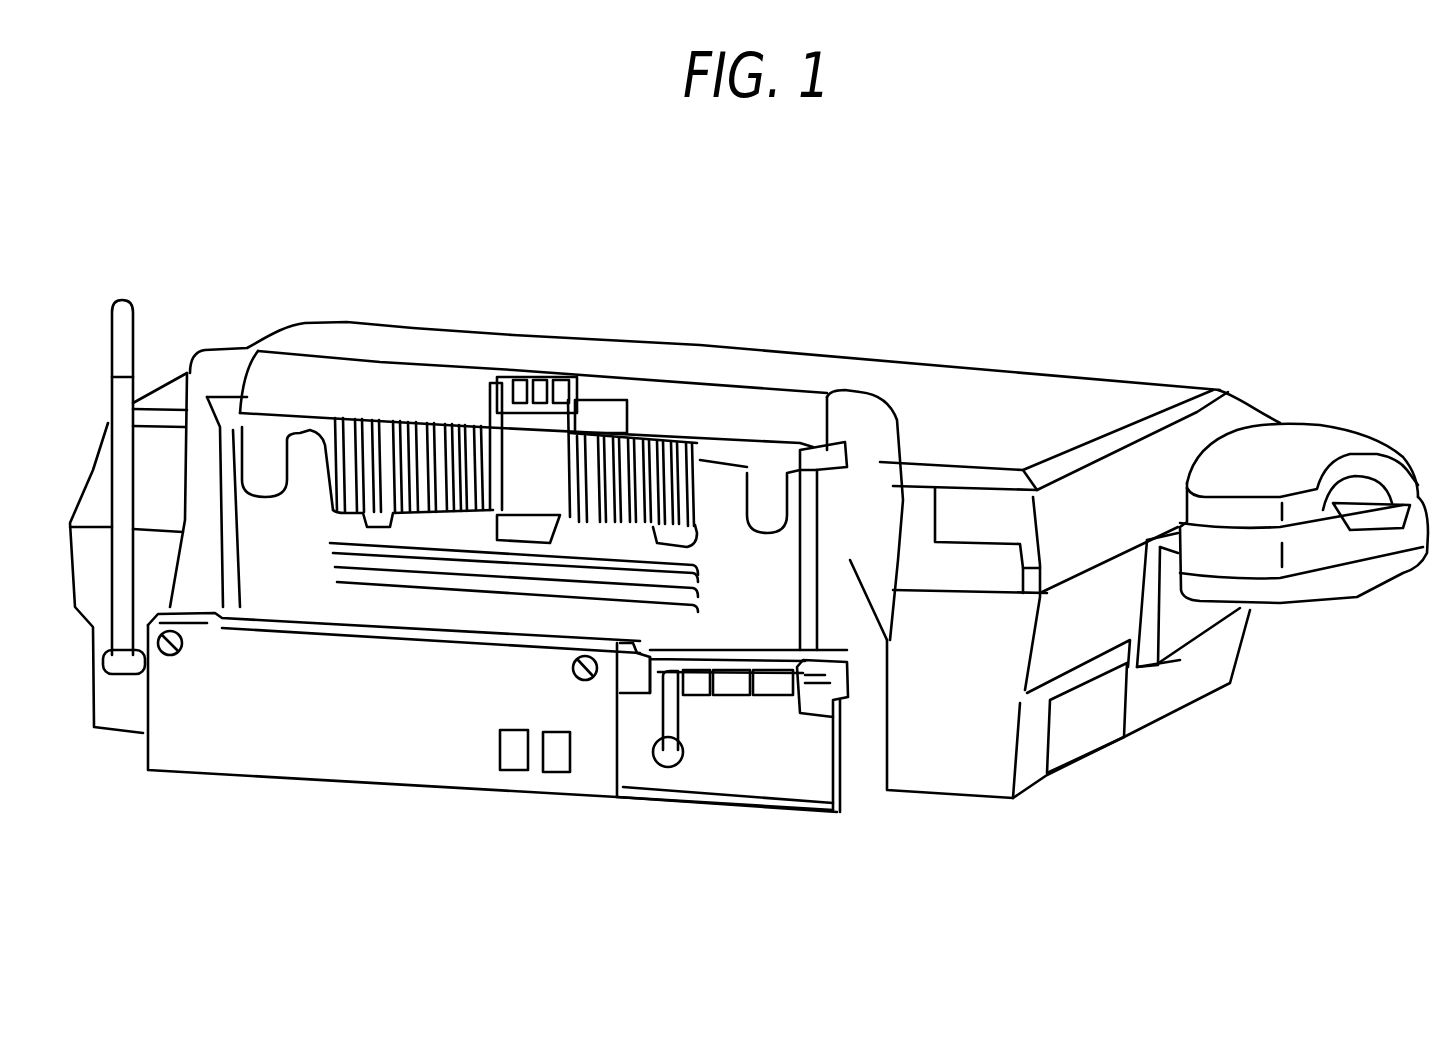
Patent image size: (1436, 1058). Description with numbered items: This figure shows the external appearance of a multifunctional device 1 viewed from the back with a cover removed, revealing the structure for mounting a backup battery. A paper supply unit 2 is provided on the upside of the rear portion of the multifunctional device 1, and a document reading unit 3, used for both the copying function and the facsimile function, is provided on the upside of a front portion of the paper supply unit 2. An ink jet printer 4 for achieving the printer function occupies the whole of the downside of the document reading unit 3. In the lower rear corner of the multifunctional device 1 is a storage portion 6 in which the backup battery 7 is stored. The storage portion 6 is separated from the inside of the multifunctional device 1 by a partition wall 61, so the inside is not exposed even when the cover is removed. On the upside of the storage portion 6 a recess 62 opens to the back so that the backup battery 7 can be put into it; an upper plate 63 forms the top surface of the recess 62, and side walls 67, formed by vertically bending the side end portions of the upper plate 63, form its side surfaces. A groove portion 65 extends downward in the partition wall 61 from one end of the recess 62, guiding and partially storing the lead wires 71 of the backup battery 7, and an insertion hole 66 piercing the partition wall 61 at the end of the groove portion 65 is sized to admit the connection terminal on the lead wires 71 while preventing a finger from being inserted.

The multifunctional device 1 is at (253, 282).
The paper supply unit 2 is at (380, 375).
The document reading unit 3 is at (955, 407).
The ink jet printer 4 is at (1266, 614).
The storage portion 6 is at (709, 601).
The backup battery 7 is at (776, 693).
The partition wall 61 is at (712, 782).
The recess 62 is at (740, 700).
The upper plate 63 is at (723, 656).
The groove portion 65 is at (656, 692).
The insertion hole 66 is at (668, 768).
The side walls 67 is at (847, 706).
The lead wires 71 is at (659, 722).